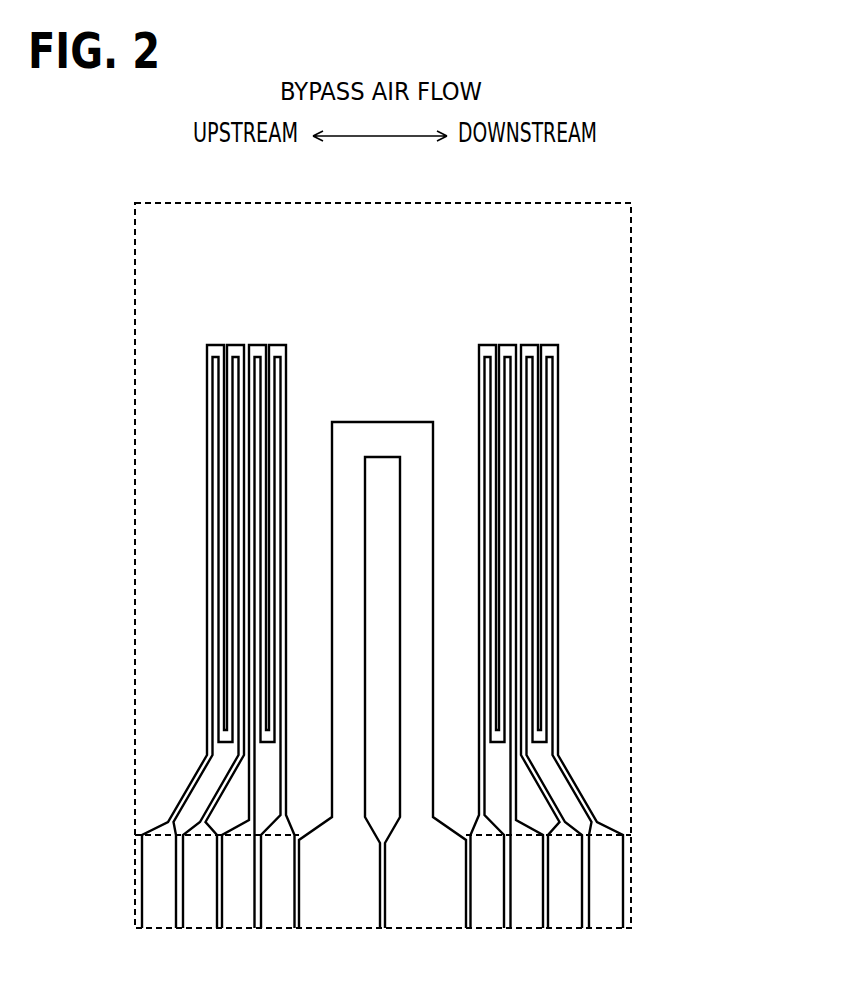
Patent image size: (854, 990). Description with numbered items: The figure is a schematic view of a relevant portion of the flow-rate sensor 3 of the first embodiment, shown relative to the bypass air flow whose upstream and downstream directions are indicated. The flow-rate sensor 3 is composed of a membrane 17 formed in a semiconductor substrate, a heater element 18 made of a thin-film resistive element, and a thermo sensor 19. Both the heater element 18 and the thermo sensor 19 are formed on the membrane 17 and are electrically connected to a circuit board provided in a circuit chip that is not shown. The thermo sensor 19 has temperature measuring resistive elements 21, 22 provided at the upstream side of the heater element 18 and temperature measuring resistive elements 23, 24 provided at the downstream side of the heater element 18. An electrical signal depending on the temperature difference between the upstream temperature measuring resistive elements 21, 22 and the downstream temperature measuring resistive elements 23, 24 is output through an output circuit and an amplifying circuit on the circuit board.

The flow-rate sensor 3 is at (715, 182).
The membrane 17 is at (633, 385).
The heater element 18 is at (398, 414).
The thermo sensor 19 is at (308, 341).
The temperature measuring resistive element 21 is at (207, 343).
The temperature measuring resistive element 22 is at (249, 343).
The temperature measuring resistive element 23 is at (481, 343).
The temperature measuring resistive element 24 is at (522, 343).